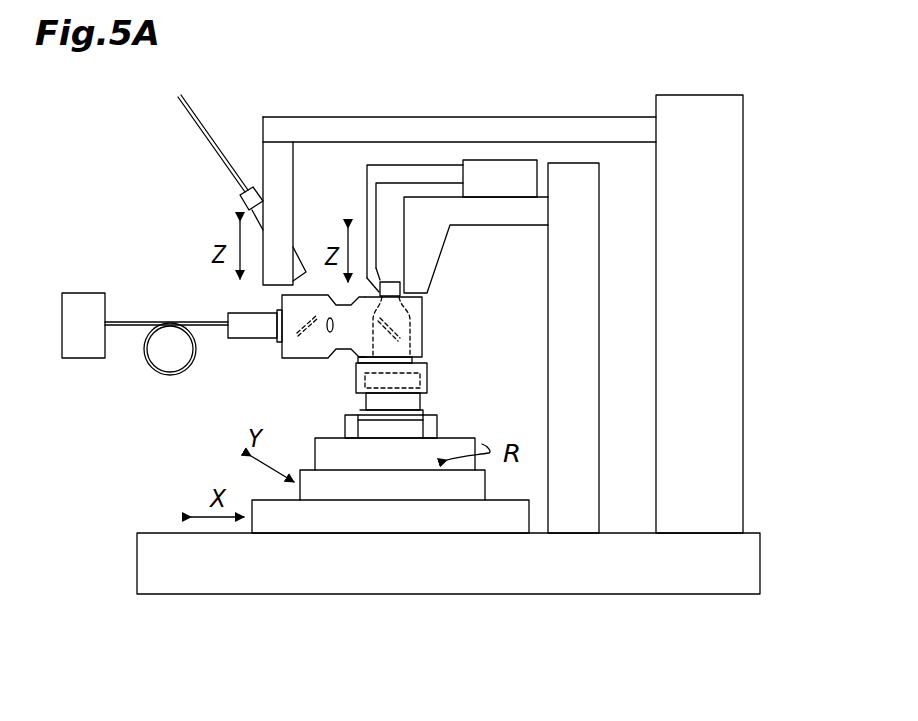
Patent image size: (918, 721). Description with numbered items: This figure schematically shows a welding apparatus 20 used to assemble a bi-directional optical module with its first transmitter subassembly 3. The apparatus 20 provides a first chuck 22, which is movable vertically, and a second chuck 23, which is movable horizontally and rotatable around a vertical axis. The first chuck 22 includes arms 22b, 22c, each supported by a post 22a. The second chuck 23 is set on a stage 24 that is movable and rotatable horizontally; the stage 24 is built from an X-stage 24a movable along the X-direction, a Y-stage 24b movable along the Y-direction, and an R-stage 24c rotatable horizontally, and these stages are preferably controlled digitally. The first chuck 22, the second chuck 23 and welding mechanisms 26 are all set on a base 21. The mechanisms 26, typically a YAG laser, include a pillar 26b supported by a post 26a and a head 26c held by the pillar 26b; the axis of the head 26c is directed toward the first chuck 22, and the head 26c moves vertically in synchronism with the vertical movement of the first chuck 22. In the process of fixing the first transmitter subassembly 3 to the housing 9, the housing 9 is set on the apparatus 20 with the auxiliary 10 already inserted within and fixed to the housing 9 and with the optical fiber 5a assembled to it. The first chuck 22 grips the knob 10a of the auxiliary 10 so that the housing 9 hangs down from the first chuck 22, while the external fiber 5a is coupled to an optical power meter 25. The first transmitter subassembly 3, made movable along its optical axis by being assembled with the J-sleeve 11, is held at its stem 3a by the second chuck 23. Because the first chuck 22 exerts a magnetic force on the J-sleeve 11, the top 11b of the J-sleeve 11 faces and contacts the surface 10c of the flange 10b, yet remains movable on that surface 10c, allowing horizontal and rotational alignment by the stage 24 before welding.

The first transmitter subassembly 3 is at (421, 406).
The stem 3a is at (403, 422).
The optical fiber 5a is at (210, 322).
The housing 9 is at (281, 345).
The auxiliary 10 is at (393, 322).
The knob 10a is at (386, 293).
The flange 10b is at (360, 359).
The surface 10c is at (360, 386).
The J-sleeve 11 is at (426, 359).
The top 11b is at (421, 360).
The welding apparatus 20 is at (512, 278).
The base 21 is at (286, 582).
The first chuck 22 is at (480, 346).
The post 22a is at (586, 295).
The arm 22b is at (425, 268).
The arm 22c is at (368, 212).
The second chuck 23 is at (443, 428).
The stage 24 is at (358, 507).
The X-stage 24a is at (329, 522).
The Y-stage 24b is at (374, 491).
The R-stage 24c is at (428, 460).
The optical power meter 25 is at (87, 358).
The mechanisms 26 is at (441, 113).
The post 26a is at (744, 212).
The pillar 26b is at (270, 165).
The head 26c is at (243, 206).